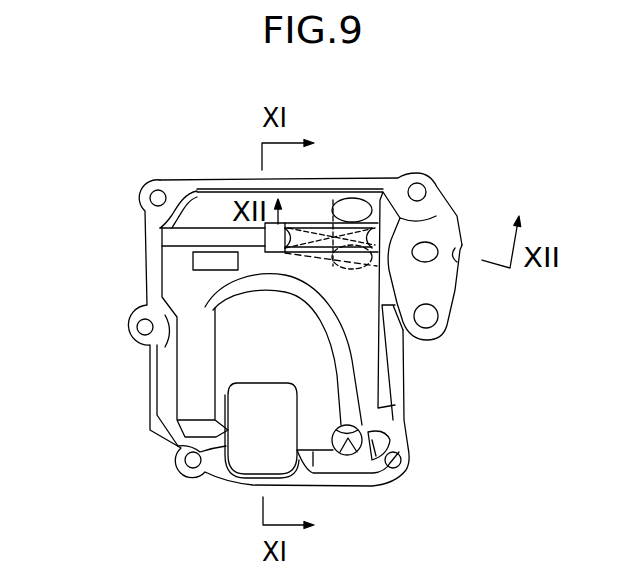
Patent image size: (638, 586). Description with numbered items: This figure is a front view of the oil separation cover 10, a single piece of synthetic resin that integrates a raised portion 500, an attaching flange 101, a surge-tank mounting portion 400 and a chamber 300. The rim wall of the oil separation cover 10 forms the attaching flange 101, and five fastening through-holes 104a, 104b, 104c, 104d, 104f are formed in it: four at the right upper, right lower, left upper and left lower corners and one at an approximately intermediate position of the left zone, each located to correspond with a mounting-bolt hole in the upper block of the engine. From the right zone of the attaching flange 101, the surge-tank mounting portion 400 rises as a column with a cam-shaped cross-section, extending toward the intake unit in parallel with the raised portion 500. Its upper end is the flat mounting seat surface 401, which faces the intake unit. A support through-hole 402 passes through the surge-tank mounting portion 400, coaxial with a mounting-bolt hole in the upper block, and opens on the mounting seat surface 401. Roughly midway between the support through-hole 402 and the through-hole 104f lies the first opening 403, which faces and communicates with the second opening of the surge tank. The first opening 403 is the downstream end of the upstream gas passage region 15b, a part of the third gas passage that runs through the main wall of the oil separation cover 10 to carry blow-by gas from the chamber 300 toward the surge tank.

The oil separation cover 10 is at (353, 164).
The attaching flange 101 is at (449, 209).
The raised portion 500 is at (207, 240).
The chamber 300 is at (384, 195).
The upstream gas passage region 15b is at (330, 262).
The through-hole 104a is at (141, 198).
The through-hole 104b is at (127, 328).
The through-hole 104c is at (178, 466).
The through-hole 104d is at (407, 458).
The through-hole 104f is at (421, 182).
The surge-tank mounting portion 400 is at (453, 305).
The mounting seat surface 401 is at (463, 252).
The support through-hole 402 is at (426, 338).
The first opening 403 is at (440, 264).